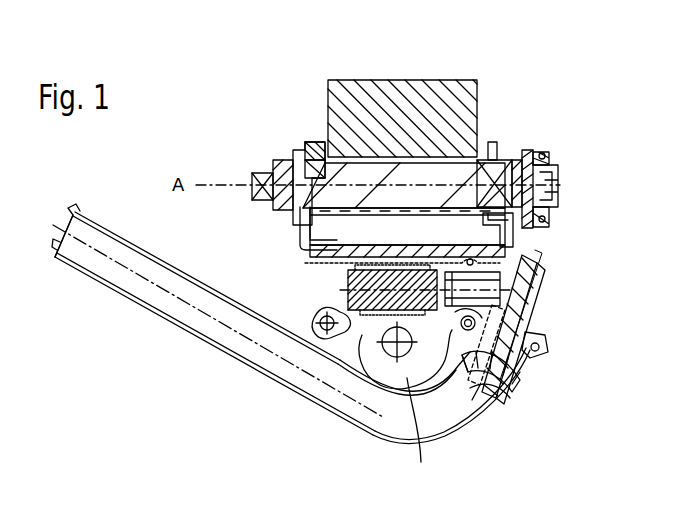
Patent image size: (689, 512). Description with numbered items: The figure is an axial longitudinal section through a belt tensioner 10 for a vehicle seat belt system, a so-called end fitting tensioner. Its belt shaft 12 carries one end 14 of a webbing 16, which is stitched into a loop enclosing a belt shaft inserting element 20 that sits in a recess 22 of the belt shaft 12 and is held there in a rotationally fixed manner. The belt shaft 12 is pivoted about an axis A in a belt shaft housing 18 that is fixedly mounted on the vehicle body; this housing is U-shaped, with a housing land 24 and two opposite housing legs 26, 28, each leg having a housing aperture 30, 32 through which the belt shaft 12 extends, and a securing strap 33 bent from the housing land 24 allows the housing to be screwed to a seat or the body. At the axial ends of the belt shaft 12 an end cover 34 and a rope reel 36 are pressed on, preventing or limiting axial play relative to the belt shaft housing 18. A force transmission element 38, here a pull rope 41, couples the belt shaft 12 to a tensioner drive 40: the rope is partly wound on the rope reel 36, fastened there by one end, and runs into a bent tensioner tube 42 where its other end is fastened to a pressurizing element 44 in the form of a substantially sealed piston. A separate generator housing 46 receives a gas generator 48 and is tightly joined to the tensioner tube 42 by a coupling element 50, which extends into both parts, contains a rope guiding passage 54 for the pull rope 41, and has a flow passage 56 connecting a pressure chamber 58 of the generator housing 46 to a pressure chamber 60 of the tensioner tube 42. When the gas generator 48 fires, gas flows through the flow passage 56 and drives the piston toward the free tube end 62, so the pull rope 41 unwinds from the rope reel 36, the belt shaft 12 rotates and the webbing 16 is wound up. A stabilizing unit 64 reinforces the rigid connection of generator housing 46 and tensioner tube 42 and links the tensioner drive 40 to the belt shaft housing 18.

The belt tensioner 10 is at (162, 372).
The belt shaft 12 is at (505, 187).
The end of the webbing 14 is at (320, 141).
The webbing 16 is at (412, 108).
The belt shaft housing 18 is at (520, 235).
The belt shaft inserting element 20 is at (425, 194).
The recess 22 is at (482, 143).
The housing land 24 is at (368, 252).
The housing leg 26 is at (300, 161).
The housing leg 28 is at (503, 168).
The housing aperture 30 is at (312, 172).
The housing aperture 32 is at (560, 184).
The securing strap 33 is at (393, 368).
The end cover 34 is at (262, 172).
The rope reel 36 is at (552, 211).
The force transmission element 38 is at (540, 259).
The tensioner drive 40 is at (493, 417).
The pull rope 41 is at (548, 151).
The tensioner tube 42 is at (150, 308).
The pressurizing element 44 is at (498, 386).
The generator housing 46 is at (352, 338).
The gas generator 48 is at (360, 288).
The coupling element 50 is at (538, 284).
The rope guiding passage 54 is at (540, 301).
The flow passage 56 is at (500, 349).
The pressure chamber 58 is at (423, 432).
The pressure chamber 60 is at (515, 368).
The free tube end 62 is at (67, 219).
The stabilizing unit 64 is at (546, 354).